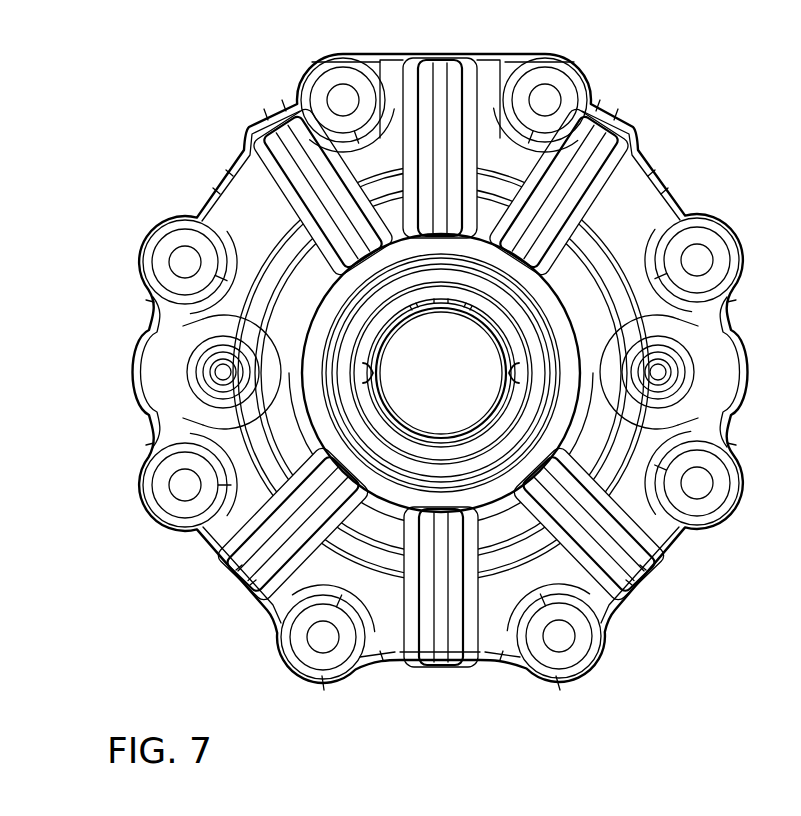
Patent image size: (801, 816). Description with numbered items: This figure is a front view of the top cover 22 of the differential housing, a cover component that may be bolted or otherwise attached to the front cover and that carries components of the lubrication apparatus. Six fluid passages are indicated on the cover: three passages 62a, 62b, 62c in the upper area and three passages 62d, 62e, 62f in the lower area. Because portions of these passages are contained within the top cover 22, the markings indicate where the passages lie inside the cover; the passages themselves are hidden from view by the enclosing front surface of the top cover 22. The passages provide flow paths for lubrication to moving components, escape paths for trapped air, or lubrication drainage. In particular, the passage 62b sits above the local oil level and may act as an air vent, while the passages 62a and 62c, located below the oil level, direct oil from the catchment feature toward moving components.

The top cover 22 is at (138, 65).
The passage 62a is at (297, 153).
The oil passage 62b is at (443, 83).
The passage 62c is at (588, 160).
The passage 62d is at (618, 556).
The passage 62e is at (447, 617).
The passage 62f is at (197, 536).